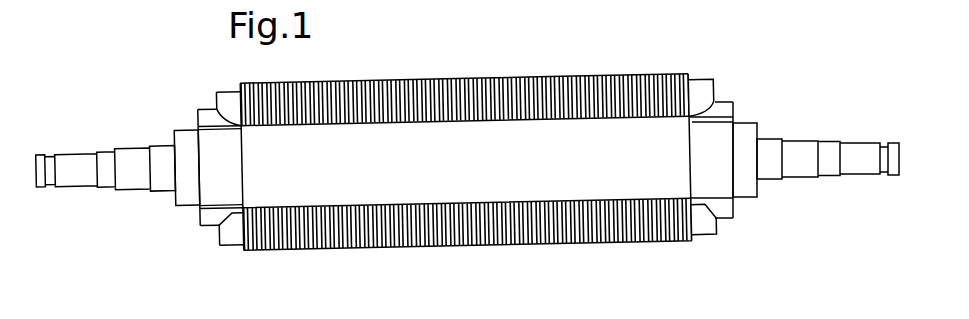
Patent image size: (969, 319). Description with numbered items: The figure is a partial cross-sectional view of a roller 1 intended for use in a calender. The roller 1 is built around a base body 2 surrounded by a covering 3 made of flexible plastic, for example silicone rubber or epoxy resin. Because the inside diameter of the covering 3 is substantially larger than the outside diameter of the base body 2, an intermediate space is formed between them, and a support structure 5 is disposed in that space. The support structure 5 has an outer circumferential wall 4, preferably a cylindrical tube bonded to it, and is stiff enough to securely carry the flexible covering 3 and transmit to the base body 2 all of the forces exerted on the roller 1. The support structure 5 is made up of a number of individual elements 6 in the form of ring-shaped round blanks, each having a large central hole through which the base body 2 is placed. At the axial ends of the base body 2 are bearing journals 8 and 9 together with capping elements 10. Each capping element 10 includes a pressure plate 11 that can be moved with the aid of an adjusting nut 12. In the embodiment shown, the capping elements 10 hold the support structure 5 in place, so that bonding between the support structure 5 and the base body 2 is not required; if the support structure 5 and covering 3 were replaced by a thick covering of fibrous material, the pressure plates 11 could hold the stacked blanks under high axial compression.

The roller 1 is at (309, 266).
The base body 2 is at (403, 192).
The covering 3 is at (424, 82).
The outer circumferential wall 4 is at (570, 77).
The support structure 5 is at (634, 76).
The individual elements 6 is at (505, 80).
The bearing journal 8 is at (132, 180).
The bearing journal 9 is at (857, 167).
The capping element 10 is at (183, 96).
The pressure plate 11 is at (233, 232).
The adjusting nut 12 is at (210, 217).